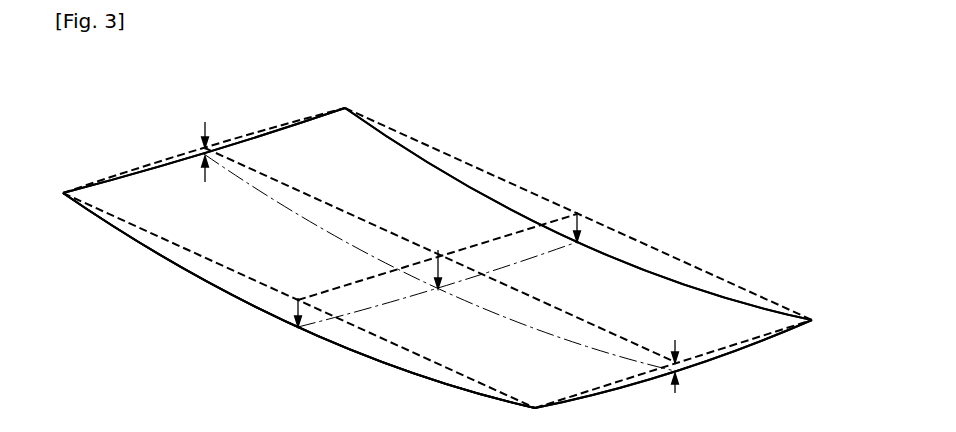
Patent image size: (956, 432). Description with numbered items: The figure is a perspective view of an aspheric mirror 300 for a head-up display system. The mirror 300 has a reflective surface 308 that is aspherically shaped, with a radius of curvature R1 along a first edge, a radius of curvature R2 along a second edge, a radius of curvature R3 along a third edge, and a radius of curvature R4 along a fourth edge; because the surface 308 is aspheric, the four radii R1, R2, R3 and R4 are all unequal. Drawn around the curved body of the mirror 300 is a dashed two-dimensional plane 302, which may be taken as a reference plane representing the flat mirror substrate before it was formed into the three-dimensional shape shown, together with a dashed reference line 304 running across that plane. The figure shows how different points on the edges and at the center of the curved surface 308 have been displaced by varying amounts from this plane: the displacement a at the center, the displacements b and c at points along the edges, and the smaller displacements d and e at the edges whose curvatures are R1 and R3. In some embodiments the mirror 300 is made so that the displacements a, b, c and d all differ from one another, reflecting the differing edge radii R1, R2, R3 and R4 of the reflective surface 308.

The mirror 300 is at (368, 359).
The reference plane (flat state) 302 is at (678, 260).
The center line of reference plane 304 is at (333, 207).
The reflective surface 308 is at (257, 266).
The radius of curvature along a first edge R1 is at (286, 128).
The radius of curvature along a second edge R2 is at (182, 267).
The radius of curvature along a third edge R3 is at (622, 378).
The radius of curvature along a fourth edge R4 is at (500, 202).
The displacement a is at (438, 258).
The displacement b is at (578, 212).
The displacement c is at (300, 299).
The displacement d is at (194, 139).
The displacement e is at (691, 373).